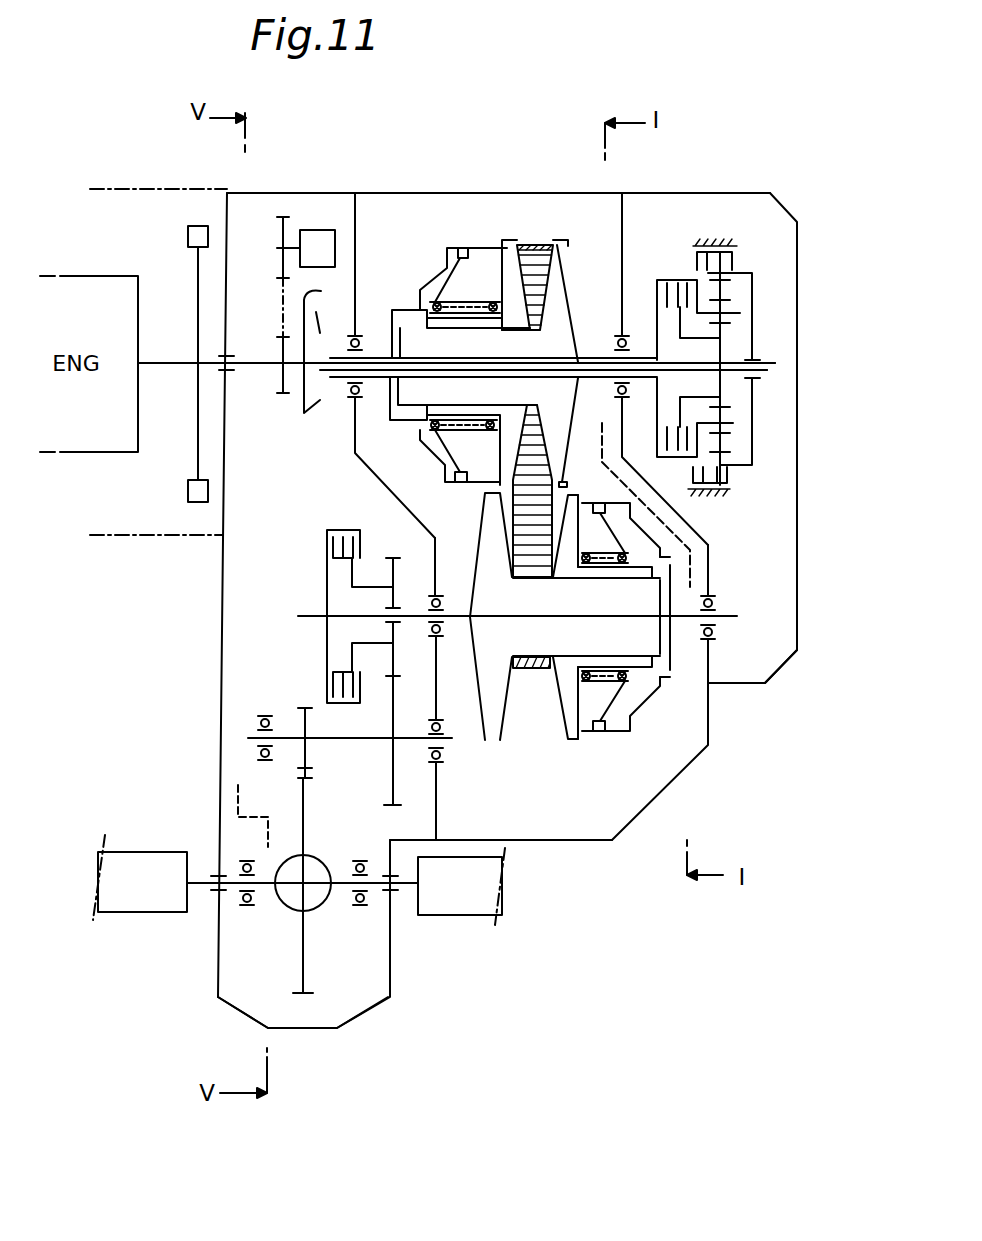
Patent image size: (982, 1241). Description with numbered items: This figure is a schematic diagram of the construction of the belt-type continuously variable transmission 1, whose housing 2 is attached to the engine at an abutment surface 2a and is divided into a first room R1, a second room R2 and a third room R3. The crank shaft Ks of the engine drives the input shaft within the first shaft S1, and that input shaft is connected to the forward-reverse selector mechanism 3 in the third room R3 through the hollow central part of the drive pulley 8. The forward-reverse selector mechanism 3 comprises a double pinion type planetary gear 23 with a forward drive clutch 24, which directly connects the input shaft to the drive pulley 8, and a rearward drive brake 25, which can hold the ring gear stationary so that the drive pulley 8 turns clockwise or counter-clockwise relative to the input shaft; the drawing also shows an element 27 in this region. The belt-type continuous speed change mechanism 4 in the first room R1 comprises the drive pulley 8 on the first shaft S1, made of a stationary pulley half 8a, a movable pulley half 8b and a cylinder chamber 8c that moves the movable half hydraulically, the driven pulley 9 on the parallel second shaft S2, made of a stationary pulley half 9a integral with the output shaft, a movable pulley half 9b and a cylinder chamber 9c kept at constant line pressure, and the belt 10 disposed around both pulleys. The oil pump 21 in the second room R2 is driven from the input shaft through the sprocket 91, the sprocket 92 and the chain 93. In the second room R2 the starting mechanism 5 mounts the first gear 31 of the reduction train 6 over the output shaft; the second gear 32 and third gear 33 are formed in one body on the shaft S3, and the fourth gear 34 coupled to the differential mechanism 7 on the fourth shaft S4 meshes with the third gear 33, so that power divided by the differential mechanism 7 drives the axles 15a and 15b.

The belt-type continuously variable transmission 1 is at (495, 143).
The transmission housing 2 is at (778, 201).
The abutment surface 2a is at (225, 213).
The forward-reverse selector mechanism 3 is at (707, 311).
The belt-type continuous speed change mechanism 4 is at (455, 237).
The starting mechanism 5 is at (333, 530).
The reduction train 6 is at (214, 740).
The differential mechanism 7 is at (316, 918).
The drive pulley 8 is at (510, 306).
The stationary pulley half 8a is at (576, 326).
The movable pulley half 8b is at (535, 245).
The cylinder chamber 8c is at (490, 265).
The driven pulley 9 is at (548, 609).
The stationary pulley half 9a is at (497, 742).
The movable pulley half 9b is at (563, 742).
The cylinder chamber 9c is at (619, 635).
The belt 10 is at (514, 538).
The axle 15a is at (157, 895).
The axle 15b is at (447, 906).
The oil pump 21 is at (318, 230).
The double pinion type planetary gear 23 is at (736, 315).
The forward drive clutch 24 is at (665, 279).
The rearward drive brake 25 is at (697, 251).
The one-way clutch 27 is at (316, 312).
The first gear 31 is at (393, 557).
The second gear 32 is at (393, 703).
The third gear 33 is at (305, 708).
The fourth gear 34 is at (303, 812).
The sprocket 91 is at (283, 380).
The sprocket 92 is at (283, 216).
The chain 93 is at (283, 322).
The crank shaft Ks is at (170, 366).
The first shaft S1 is at (772, 378).
The second shaft S2 is at (718, 612).
The shaft S3 is at (372, 740).
The fourth shaft S4 is at (262, 890).
The first room R1 is at (578, 824).
The second room R2 is at (318, 1010).
The third room R3 is at (762, 656).